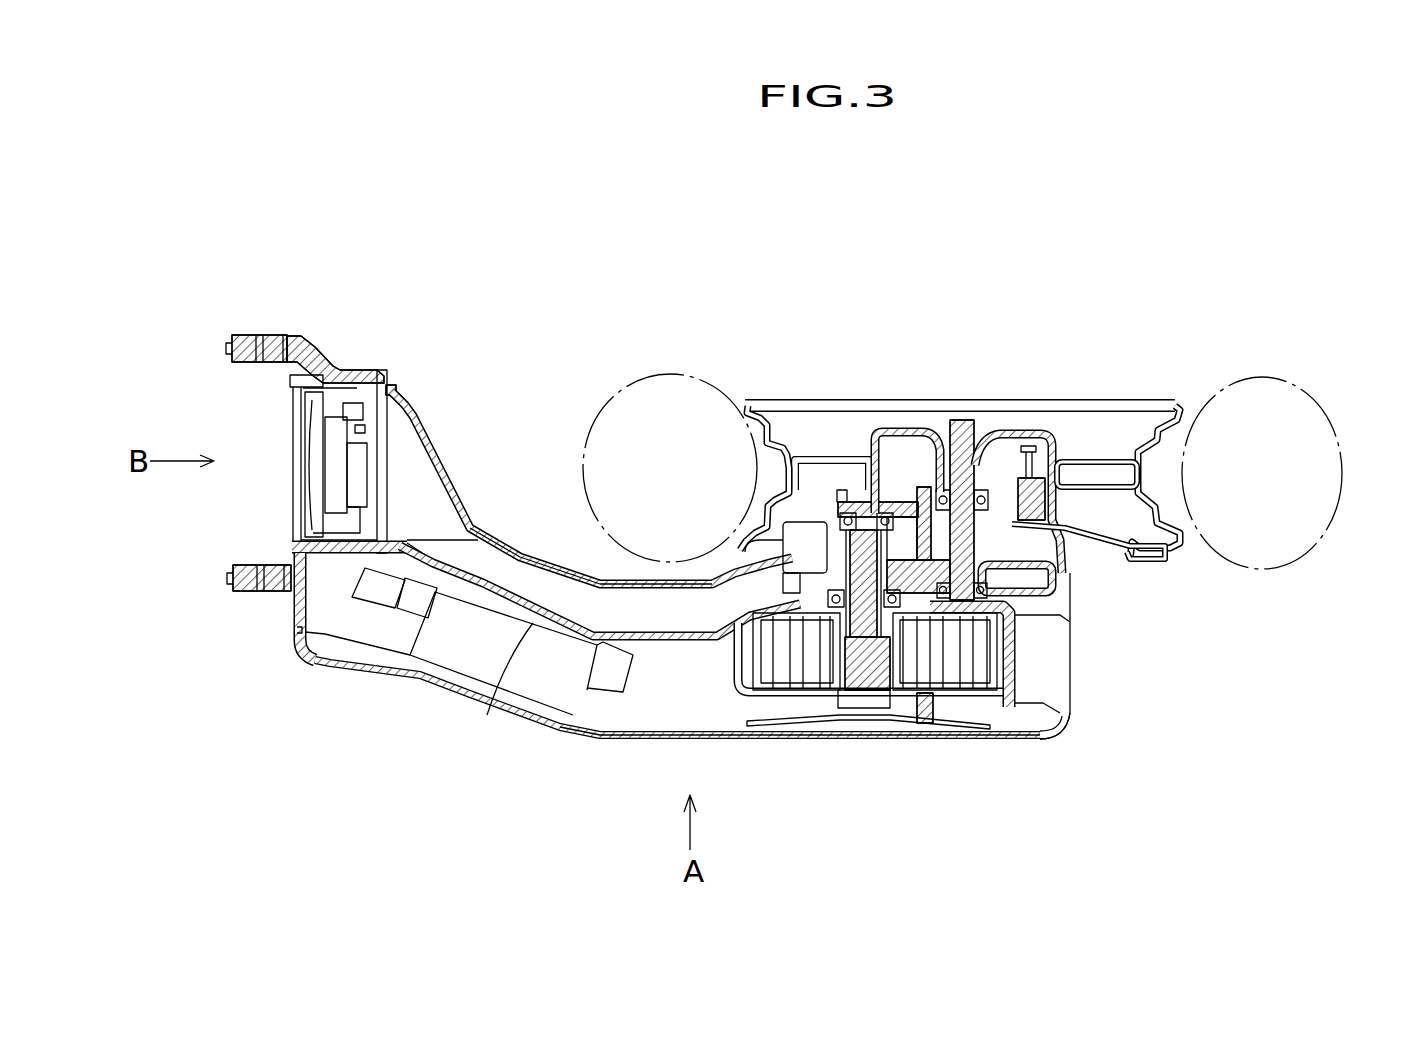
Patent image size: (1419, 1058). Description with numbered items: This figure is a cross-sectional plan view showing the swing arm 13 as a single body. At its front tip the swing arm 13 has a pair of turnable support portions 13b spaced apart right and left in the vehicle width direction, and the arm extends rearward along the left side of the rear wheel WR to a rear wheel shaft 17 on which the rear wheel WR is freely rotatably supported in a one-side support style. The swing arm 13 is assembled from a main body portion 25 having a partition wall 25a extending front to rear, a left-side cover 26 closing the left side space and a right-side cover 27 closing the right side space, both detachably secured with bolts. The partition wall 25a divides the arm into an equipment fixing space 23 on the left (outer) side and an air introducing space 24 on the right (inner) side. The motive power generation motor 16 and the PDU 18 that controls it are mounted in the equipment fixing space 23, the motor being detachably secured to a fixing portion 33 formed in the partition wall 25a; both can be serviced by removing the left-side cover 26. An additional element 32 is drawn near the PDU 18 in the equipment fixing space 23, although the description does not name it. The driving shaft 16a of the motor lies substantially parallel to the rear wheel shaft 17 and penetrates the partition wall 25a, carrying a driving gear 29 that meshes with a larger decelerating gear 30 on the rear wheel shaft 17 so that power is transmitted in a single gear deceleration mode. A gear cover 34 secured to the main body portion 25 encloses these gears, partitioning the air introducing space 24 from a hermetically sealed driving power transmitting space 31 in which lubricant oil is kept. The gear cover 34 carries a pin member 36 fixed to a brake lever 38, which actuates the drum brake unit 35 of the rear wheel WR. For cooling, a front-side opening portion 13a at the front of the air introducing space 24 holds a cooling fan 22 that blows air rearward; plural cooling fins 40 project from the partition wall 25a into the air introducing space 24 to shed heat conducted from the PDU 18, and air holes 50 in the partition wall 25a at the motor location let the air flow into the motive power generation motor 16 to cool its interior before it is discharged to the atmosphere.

The swing arm 13 is at (1052, 754).
The front-side opening portion 13a is at (293, 427).
The turnable support portions 13b is at (258, 333).
The motive power generation motor 16 is at (722, 640).
The driving shaft 16a is at (857, 500).
The rear wheel shaft 17 is at (962, 415).
The PDU 18 is at (443, 657).
The cooling fan 22 is at (340, 467).
The equipment fixing space 23 is at (353, 630).
The air introducing space 24 is at (413, 503).
The main body portion 25 is at (683, 636).
The partition wall 25a is at (660, 640).
The left-side cover 26 is at (573, 733).
The right-side cover 27 is at (548, 570).
The driving gear 29 is at (780, 515).
The decelerating gear 30 is at (1061, 578).
The driving power transmitting space 31 is at (912, 537).
The cushion end 32 is at (530, 660).
The fixing portion 33 is at (930, 633).
The gear cover 34 is at (783, 540).
The drum brake unit 35 is at (1025, 442).
The pin member 36 is at (1050, 487).
The brake lever 38 is at (1143, 563).
The cooling fins 40 is at (503, 573).
The air holes 50 is at (712, 565).
The rear wheel WR is at (1280, 410).